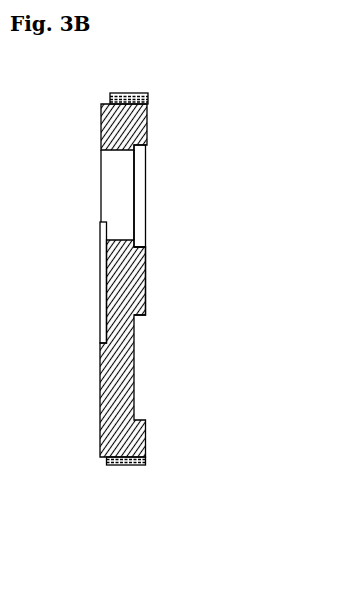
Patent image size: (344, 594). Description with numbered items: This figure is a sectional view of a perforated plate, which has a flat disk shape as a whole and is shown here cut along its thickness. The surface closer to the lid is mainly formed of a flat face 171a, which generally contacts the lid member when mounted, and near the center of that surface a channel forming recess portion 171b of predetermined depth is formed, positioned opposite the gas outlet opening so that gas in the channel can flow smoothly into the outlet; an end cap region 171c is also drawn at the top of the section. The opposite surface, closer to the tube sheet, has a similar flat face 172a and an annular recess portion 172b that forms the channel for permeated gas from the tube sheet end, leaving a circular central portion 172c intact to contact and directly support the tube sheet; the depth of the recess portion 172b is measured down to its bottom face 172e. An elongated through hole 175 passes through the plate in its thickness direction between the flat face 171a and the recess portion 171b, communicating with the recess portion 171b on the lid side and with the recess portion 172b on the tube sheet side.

The flat face 171a is at (100, 385).
The channel forming recess portion 171b is at (100, 300).
The upper cap portion 171c is at (108, 104).
The flat face 172a is at (145, 430).
The recess portion 172b is at (143, 195).
The central portion 172c is at (145, 260).
The bottom face 172e is at (138, 369).
The through hole 175 is at (112, 173).